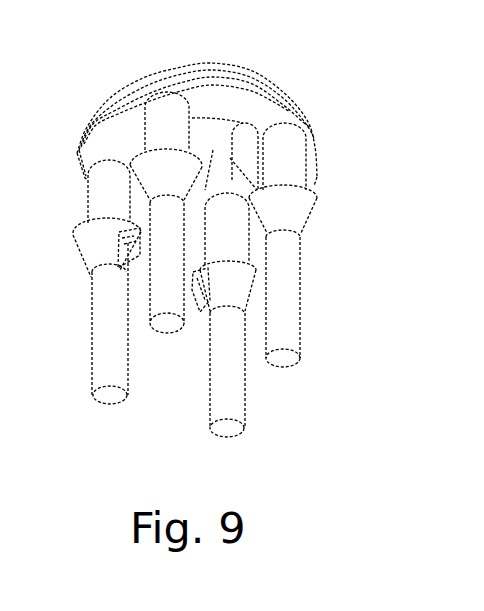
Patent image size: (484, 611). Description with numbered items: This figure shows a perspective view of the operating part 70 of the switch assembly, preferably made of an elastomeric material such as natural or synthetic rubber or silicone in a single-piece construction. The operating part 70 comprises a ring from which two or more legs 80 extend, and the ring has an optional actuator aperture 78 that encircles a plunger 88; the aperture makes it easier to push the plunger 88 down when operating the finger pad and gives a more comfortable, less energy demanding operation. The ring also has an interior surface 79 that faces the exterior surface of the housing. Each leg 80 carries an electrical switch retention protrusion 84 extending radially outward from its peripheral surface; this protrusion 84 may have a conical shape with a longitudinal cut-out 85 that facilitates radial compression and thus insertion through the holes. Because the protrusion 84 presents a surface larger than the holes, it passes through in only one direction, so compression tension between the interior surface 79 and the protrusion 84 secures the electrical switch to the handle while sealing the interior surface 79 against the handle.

The operating part 70 is at (296, 90).
The actuator aperture 78 is at (240, 142).
The interior surface 79 is at (93, 137).
The legs 80 is at (239, 264).
The electrical switch retention protrusion 84 is at (250, 273).
The longitudinal cut-out 85 is at (223, 289).
The plunger 88 is at (213, 157).